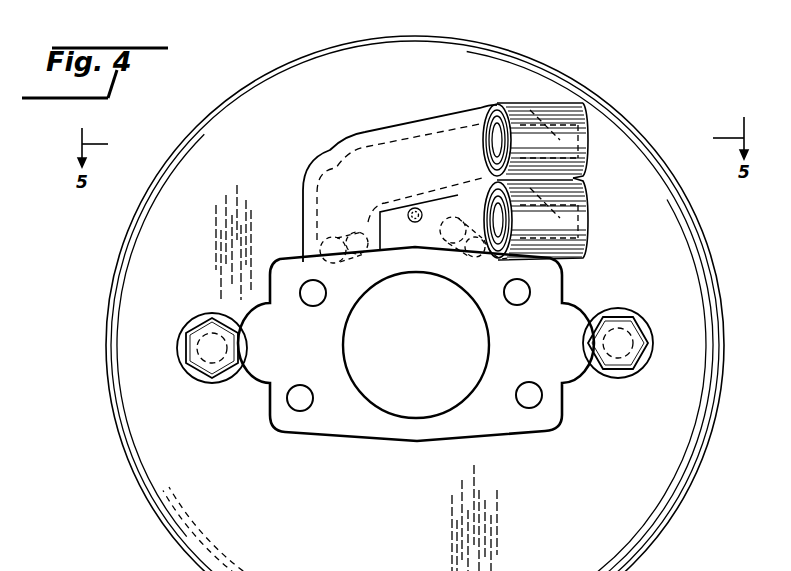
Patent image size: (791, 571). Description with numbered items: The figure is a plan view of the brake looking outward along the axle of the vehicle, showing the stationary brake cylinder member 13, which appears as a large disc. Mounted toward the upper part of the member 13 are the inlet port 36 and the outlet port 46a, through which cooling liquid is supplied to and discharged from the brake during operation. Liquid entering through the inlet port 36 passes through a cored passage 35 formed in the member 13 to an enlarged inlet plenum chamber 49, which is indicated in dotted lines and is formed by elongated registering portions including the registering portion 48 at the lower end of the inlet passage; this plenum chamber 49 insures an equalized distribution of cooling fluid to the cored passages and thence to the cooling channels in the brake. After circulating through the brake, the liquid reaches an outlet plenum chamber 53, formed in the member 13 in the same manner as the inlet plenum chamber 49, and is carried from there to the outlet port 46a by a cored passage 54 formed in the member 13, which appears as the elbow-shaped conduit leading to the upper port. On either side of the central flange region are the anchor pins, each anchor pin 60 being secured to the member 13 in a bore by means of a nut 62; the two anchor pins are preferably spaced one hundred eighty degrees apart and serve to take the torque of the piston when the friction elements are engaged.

The stationary brake cylinder member 13 is at (242, 453).
The cored passage 35 is at (576, 234).
The inlet port 36 is at (503, 257).
The outlet port 46a is at (496, 112).
The registering portion 48 is at (472, 257).
The plenum chamber 49 is at (452, 237).
The outlet plenum chamber 53 is at (366, 256).
The cored passage 54 is at (331, 168).
The anchor pin 60 is at (202, 368).
The nut 62 is at (197, 334).